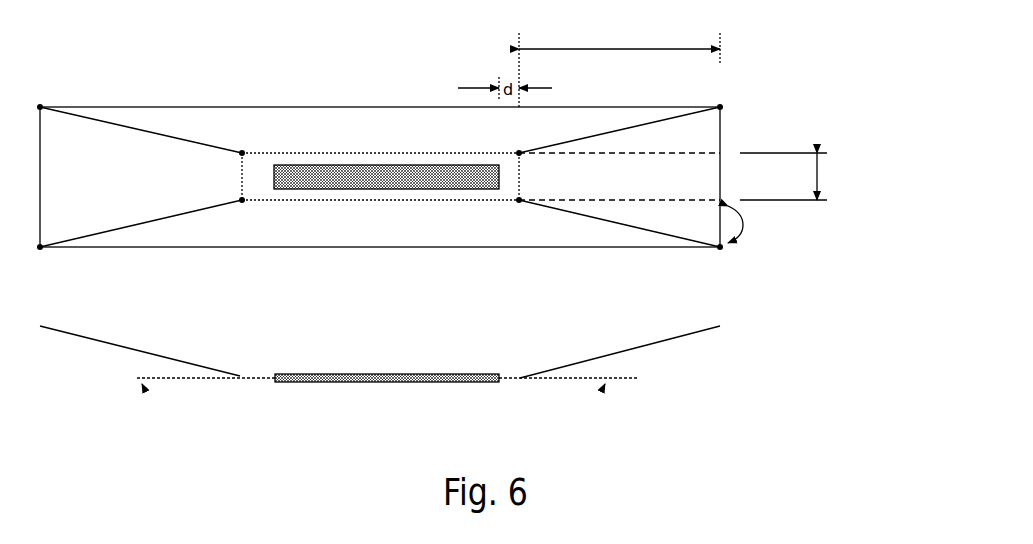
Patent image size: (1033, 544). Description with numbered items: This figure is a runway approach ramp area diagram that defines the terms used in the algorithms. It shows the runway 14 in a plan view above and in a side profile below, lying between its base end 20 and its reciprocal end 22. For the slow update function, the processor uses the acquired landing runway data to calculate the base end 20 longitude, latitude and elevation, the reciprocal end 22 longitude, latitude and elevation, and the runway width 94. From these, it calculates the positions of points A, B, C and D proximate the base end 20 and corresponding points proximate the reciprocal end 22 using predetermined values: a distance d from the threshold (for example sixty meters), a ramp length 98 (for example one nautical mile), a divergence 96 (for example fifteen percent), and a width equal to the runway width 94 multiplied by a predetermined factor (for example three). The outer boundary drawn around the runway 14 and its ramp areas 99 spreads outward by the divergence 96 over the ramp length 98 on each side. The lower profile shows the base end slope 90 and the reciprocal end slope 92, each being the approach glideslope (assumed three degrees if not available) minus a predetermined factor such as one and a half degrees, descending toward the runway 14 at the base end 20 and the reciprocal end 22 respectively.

The runway 14 is at (367, 168).
The base end 20 is at (273, 146).
The reciprocal end 22 is at (498, 146).
The base end minimum approach glideslope 90 is at (143, 363).
The reciprocal end minimum approach glideslope 92 is at (617, 362).
The runway width 94 is at (818, 176).
The divergence 96 is at (741, 236).
The ramp length 98 is at (680, 47).
The ramp profile outline 99 is at (396, 107).